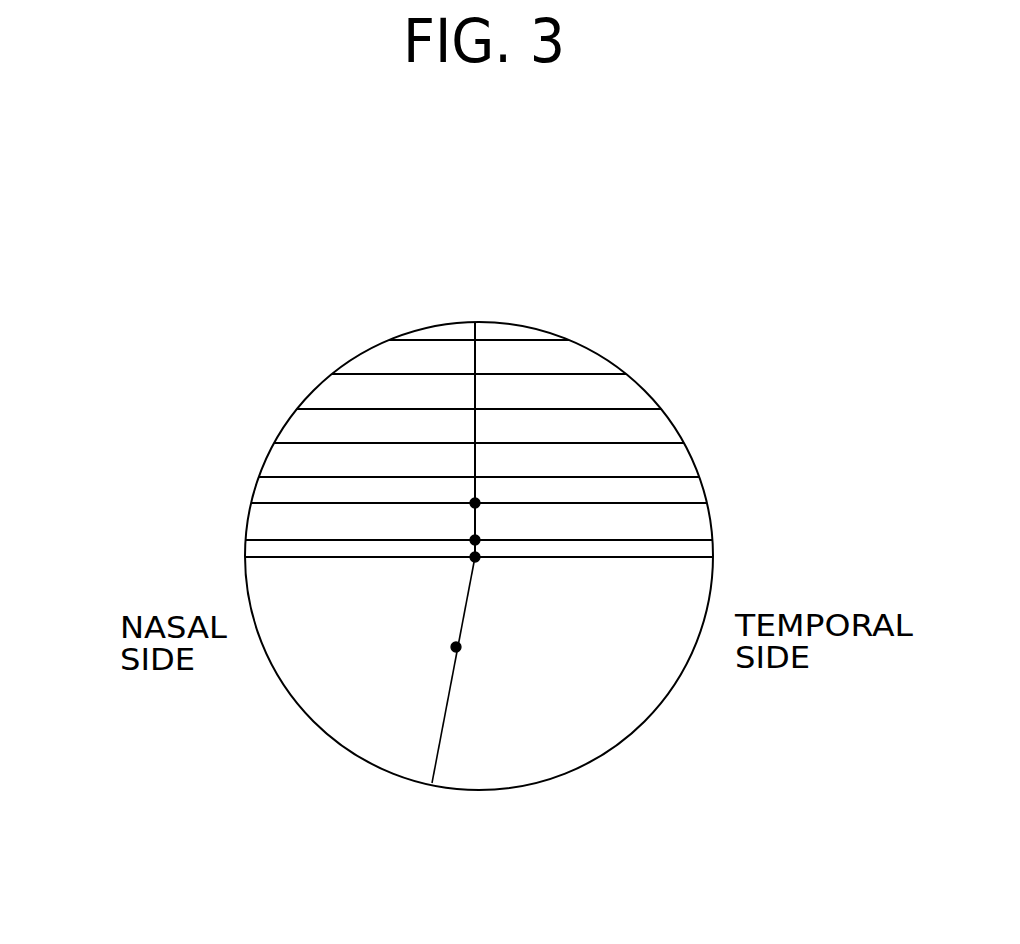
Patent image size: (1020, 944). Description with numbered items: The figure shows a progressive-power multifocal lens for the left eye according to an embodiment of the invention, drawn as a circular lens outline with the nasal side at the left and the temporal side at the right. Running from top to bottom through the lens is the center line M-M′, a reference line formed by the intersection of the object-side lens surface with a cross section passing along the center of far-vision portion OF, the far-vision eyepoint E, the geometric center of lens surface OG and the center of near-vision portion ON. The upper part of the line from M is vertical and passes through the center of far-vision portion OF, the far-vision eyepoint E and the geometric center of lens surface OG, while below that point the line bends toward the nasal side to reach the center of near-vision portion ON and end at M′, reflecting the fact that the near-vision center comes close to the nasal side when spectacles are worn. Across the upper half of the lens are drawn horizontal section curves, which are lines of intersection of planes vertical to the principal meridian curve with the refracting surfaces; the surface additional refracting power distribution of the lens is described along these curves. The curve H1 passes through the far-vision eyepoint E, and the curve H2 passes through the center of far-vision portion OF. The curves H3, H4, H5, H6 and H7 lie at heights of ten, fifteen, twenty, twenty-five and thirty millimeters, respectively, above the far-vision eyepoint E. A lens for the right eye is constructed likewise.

The center line end point M is at (473, 424).
The center line end point M′ is at (446, 690).
The horizontal section curve H1 is at (255, 556).
The horizontal section curve H2 is at (264, 503).
The horizontal section curve H3 is at (273, 475).
The horizontal section curve H4 is at (290, 441).
The horizontal section curve H5 is at (310, 406).
The horizontal section curve H6 is at (350, 374).
The horizontal section curve H7 is at (408, 338).
The center of far-vision portion OF is at (495, 492).
The far-vision eyepoint E is at (479, 529).
The geometric center of lens surface OG is at (451, 570).
The center of near-vision portion ON is at (434, 646).